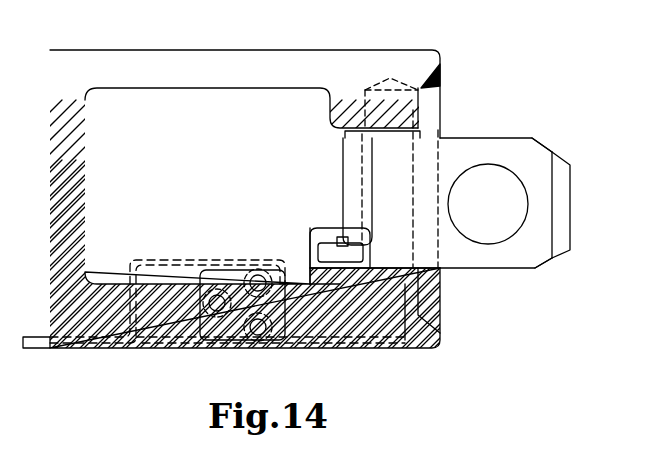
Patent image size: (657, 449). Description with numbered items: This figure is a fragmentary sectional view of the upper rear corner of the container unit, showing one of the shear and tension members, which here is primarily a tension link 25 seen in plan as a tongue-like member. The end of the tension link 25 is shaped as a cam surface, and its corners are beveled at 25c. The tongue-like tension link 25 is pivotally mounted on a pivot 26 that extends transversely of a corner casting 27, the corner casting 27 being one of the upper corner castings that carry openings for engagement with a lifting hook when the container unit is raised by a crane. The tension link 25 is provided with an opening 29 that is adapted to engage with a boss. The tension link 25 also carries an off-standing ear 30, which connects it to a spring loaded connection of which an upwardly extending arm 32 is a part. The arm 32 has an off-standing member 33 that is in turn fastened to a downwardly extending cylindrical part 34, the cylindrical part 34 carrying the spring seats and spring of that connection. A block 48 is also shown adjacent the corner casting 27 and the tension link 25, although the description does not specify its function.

The corner casting 27 is at (355, 62).
The mounting block 48 is at (418, 112).
The pivot 26 is at (415, 156).
The tension link 25 is at (518, 142).
The beveled corners 25c is at (556, 152).
The opening 29 is at (520, 208).
The off-standing ear 30 is at (325, 248).
The upwardly extending arm 32 is at (310, 270).
The off-standing member 33 is at (304, 352).
The cylindrical part 34 is at (254, 352).